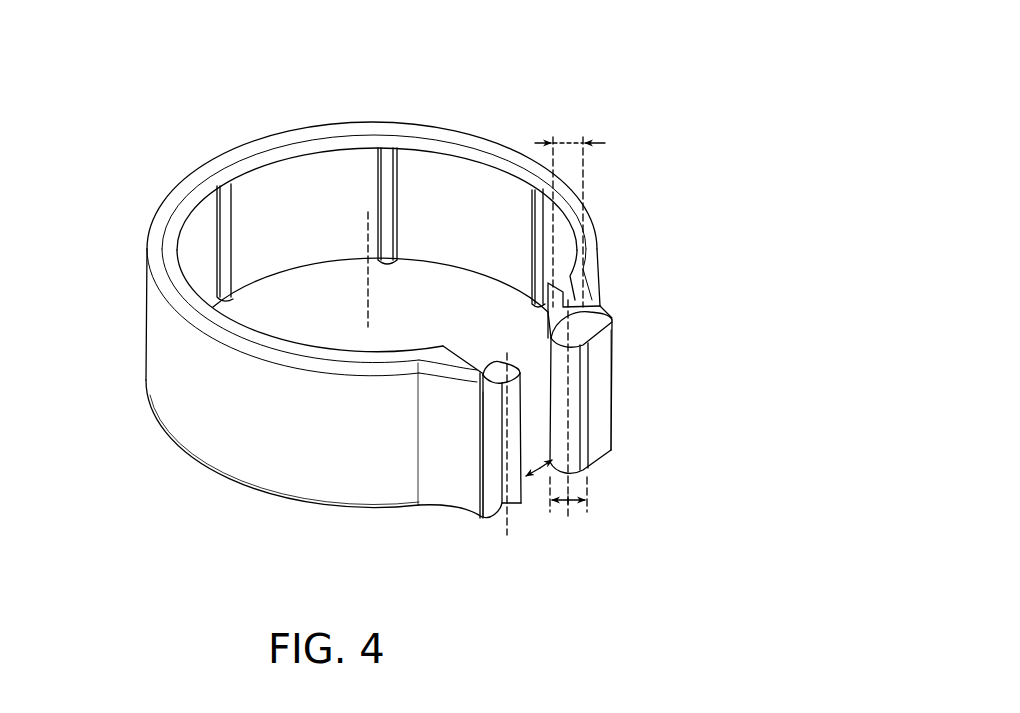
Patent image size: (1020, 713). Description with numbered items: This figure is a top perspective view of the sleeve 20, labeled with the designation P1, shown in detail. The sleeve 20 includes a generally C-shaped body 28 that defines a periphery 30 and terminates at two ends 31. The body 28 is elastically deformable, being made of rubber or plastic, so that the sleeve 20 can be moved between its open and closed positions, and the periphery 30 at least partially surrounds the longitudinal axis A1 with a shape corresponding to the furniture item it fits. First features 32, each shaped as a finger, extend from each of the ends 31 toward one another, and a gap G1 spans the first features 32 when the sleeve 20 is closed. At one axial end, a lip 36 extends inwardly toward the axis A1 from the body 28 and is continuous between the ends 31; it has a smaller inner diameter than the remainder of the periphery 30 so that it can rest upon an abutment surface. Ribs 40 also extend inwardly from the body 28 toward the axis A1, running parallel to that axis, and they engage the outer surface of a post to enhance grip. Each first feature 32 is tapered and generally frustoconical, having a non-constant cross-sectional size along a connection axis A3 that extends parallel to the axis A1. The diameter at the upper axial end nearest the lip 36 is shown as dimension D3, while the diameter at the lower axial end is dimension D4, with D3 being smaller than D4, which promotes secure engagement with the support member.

The sleeve 20 is at (478, 56).
The ring part P1 is at (335, 295).
The body 28 is at (150, 358).
The periphery 30 is at (158, 316).
The ends 31 is at (477, 531).
The first features 32 is at (517, 455).
The lip 36 is at (287, 152).
The ribs 40 is at (387, 172).
The axis A1 is at (373, 284).
The connection axis A3 is at (504, 540).
The dimension D3 is at (566, 143).
The dimension D4 is at (567, 506).
The gap G1 is at (540, 470).